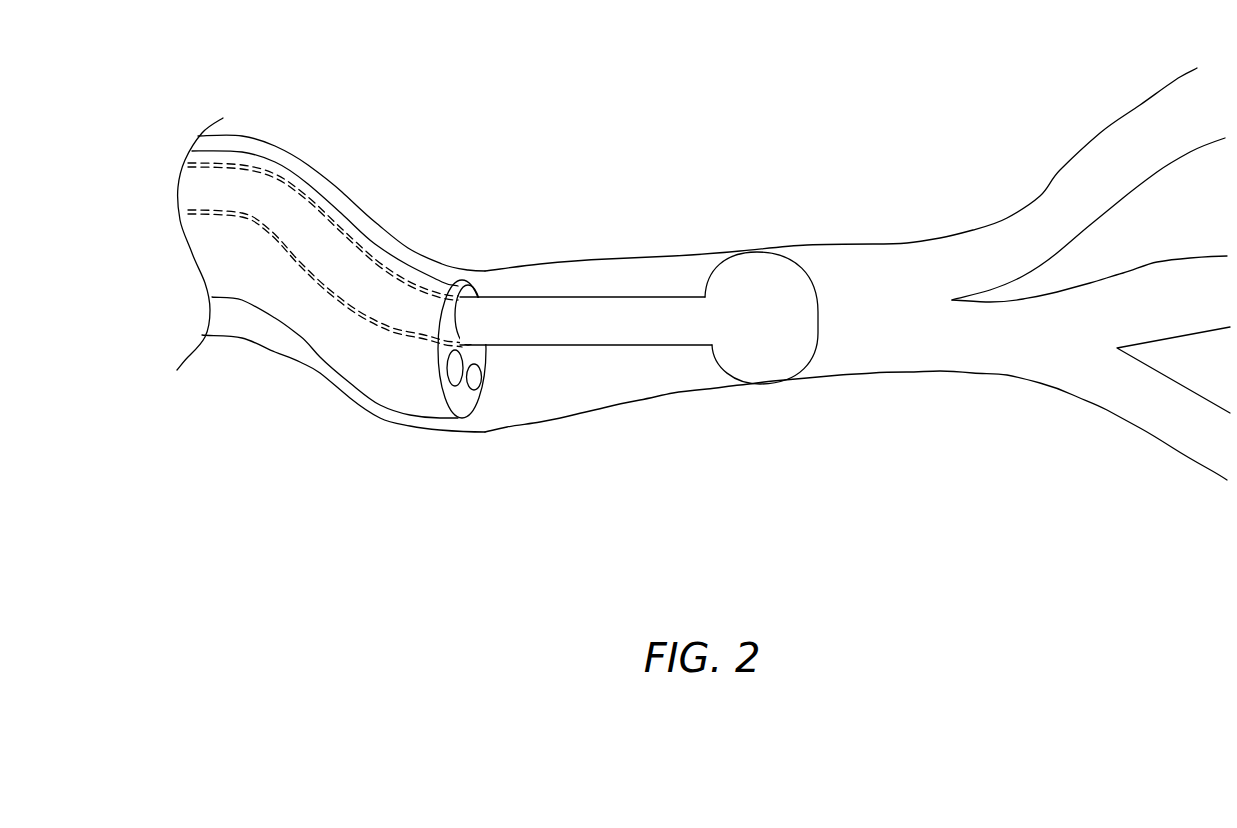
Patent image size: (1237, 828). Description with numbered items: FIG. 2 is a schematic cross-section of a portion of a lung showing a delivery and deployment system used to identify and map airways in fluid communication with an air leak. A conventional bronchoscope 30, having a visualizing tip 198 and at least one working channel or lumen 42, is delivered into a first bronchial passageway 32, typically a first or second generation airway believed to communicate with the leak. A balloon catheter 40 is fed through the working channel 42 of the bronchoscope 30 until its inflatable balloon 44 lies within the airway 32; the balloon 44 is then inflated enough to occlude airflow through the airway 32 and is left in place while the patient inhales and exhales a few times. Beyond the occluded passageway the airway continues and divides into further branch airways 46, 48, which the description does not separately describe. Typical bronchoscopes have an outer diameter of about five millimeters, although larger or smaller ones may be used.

The bronchoscope 30 is at (362, 395).
The first bronchial passageway 32 is at (598, 408).
The balloon catheter 40 is at (556, 297).
The working channel 42 is at (472, 292).
The inflatable balloon 44 is at (810, 271).
The vessel branch 46 is at (1125, 107).
The vessel branch 48 is at (1170, 257).
The visualizing tip 198 is at (481, 386).